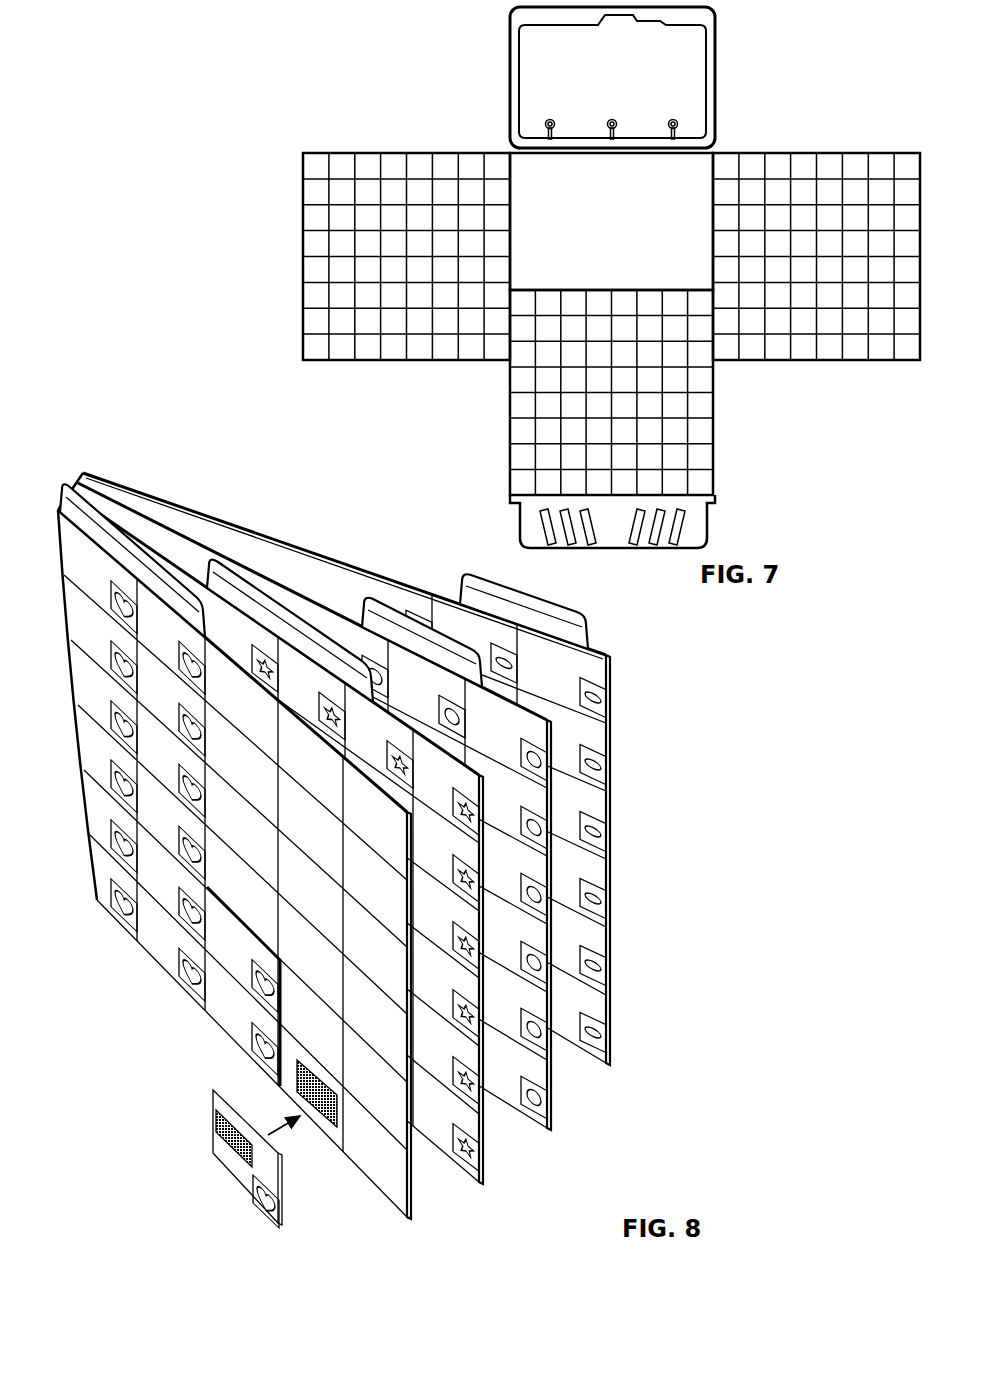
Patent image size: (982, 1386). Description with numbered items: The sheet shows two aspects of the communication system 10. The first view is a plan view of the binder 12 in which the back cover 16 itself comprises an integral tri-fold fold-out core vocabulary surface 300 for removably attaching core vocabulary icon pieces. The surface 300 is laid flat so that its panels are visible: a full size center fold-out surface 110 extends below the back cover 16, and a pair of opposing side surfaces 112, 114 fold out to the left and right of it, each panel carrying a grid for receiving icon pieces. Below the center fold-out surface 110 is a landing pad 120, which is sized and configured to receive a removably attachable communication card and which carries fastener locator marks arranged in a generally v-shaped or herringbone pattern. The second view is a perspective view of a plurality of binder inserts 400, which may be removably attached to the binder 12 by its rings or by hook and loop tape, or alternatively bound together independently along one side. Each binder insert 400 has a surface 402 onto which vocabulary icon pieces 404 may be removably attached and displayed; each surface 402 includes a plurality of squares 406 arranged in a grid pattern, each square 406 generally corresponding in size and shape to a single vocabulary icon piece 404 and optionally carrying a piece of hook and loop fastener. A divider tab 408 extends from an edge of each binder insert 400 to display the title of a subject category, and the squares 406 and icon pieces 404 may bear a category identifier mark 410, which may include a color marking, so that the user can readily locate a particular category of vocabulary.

In FIG. 7, the communication system 10 is at (320, 42).
In FIG. 8, the communication system 10 is at (74, 746).
In FIG. 7, the binder 12 is at (511, 64).
In FIG. 7, the back cover 16 is at (511, 153).
In FIG. 7, the integral fold-out core vocabulary surface 300 is at (574, 335).
In FIG. 7, the side surface 112 is at (392, 276).
In FIG. 7, the side surface 114 is at (807, 265).
In FIG. 7, the center fold-out surface 110 is at (622, 431).
In FIG. 7, the landing pad 120 is at (690, 520).
In FIG. 8, the binder insert 400 is at (367, 862).
In FIG. 8, the surface 402 is at (234, 846).
In FIG. 8, the vocabulary icon piece 404 is at (299, 885).
In FIG. 8, the square 406 is at (326, 1150).
In FIG. 8, the divider tab 408 is at (590, 634).
In FIG. 8, the category identifier mark 410 is at (258, 1200).